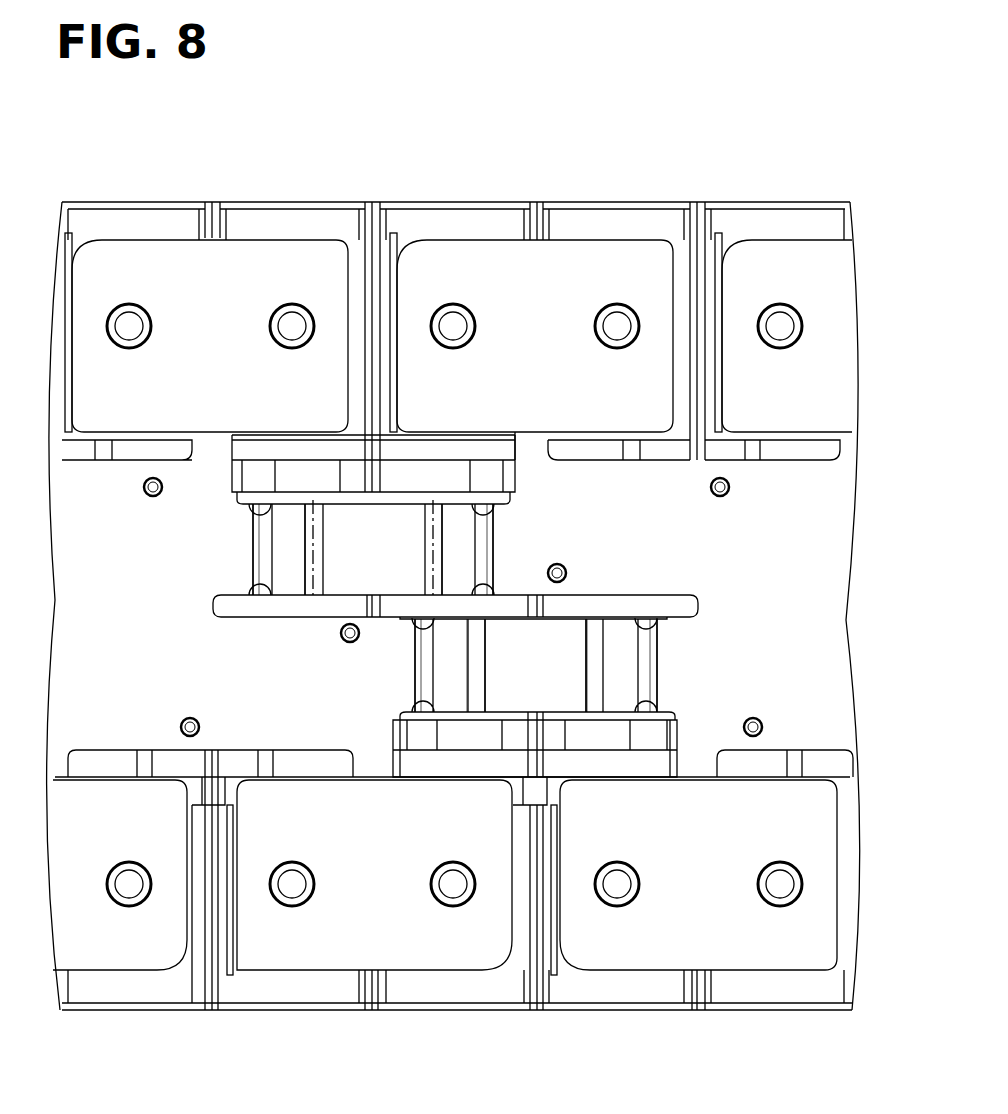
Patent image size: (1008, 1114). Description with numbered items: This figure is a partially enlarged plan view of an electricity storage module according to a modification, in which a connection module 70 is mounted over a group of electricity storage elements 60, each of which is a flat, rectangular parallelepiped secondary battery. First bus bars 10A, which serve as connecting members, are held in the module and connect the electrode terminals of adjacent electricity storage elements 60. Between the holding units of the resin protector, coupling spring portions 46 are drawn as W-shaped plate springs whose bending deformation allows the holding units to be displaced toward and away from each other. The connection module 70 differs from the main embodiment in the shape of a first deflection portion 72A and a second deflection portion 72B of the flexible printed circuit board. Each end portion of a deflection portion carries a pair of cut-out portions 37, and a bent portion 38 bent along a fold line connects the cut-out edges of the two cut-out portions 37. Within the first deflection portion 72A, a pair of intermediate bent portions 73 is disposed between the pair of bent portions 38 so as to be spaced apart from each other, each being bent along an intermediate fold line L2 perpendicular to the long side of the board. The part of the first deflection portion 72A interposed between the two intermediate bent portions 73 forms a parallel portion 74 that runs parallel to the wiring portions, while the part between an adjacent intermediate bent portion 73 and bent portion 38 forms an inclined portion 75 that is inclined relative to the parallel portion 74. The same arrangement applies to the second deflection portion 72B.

The first bus bar 10A is at (805, 930).
The electricity storage element 60 is at (793, 222).
The connection module 70 is at (853, 637).
The first deflection portion 72A is at (243, 540).
The second deflection portion 72B is at (687, 660).
The intermediate bent portion 73 is at (440, 567).
The parallel portion 74 is at (397, 542).
The inclined portion 75 is at (290, 527).
The coupling spring portion 46 is at (317, 477).
The cut-out portion 37 is at (540, 612).
The bent portion 38 is at (470, 550).
The intermediate fold line L2 is at (313, 550).